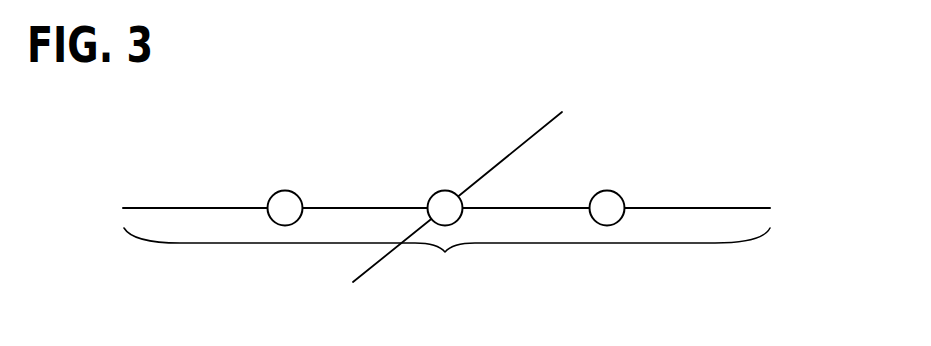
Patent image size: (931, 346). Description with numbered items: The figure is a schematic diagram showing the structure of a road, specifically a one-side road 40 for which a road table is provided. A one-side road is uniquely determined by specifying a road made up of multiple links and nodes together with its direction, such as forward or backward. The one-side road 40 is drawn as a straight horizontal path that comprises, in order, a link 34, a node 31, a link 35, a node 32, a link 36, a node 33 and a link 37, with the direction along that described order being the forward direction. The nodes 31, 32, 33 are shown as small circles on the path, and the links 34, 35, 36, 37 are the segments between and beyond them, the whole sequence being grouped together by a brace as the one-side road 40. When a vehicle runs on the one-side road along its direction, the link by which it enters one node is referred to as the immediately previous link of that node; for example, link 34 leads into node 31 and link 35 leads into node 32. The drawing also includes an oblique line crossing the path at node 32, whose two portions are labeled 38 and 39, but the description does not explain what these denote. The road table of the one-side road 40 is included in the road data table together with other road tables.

The node 31 is at (296, 190).
The node 32 is at (443, 191).
The node 33 is at (620, 194).
The link 34 is at (203, 207).
The link 35 is at (378, 207).
The link 36 is at (547, 207).
The link 37 is at (707, 208).
The upper oblique line 38 is at (503, 157).
The lower oblique line 39 is at (375, 265).
The one-side road 40 is at (447, 259).